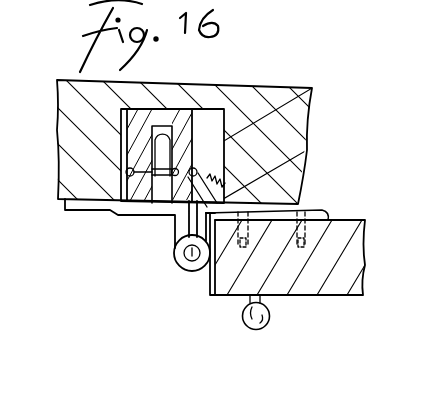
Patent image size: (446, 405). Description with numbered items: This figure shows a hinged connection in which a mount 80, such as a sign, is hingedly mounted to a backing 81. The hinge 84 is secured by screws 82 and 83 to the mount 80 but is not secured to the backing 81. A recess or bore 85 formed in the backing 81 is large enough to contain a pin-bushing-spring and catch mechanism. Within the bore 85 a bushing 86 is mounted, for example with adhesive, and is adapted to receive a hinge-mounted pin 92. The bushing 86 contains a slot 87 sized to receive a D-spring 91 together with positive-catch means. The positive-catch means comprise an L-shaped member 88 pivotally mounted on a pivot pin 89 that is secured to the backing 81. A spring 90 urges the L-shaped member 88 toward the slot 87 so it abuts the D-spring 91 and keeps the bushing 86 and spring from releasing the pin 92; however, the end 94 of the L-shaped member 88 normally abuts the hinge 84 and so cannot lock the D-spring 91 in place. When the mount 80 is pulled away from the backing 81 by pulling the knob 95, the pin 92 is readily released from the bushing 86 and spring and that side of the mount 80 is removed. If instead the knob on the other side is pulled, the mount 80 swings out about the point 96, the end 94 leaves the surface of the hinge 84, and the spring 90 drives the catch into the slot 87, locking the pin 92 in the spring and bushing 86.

The mount 80 is at (362, 268).
The backing 81 is at (272, 94).
The screw 82 is at (213, 273).
The screw 83 is at (305, 238).
The hinge 84 is at (320, 212).
The bore 85 is at (312, 90).
The bushing 86 is at (163, 108).
The slot 87 is at (179, 112).
The L-shaped member 88 is at (222, 140).
The pivot pin 89 is at (211, 142).
The spring 90 is at (197, 172).
The D-spring 91 is at (126, 172).
The pin 92 is at (165, 199).
The end of the L-shaped member 94 is at (223, 197).
The knob 95 is at (250, 323).
The point 96 is at (187, 267).